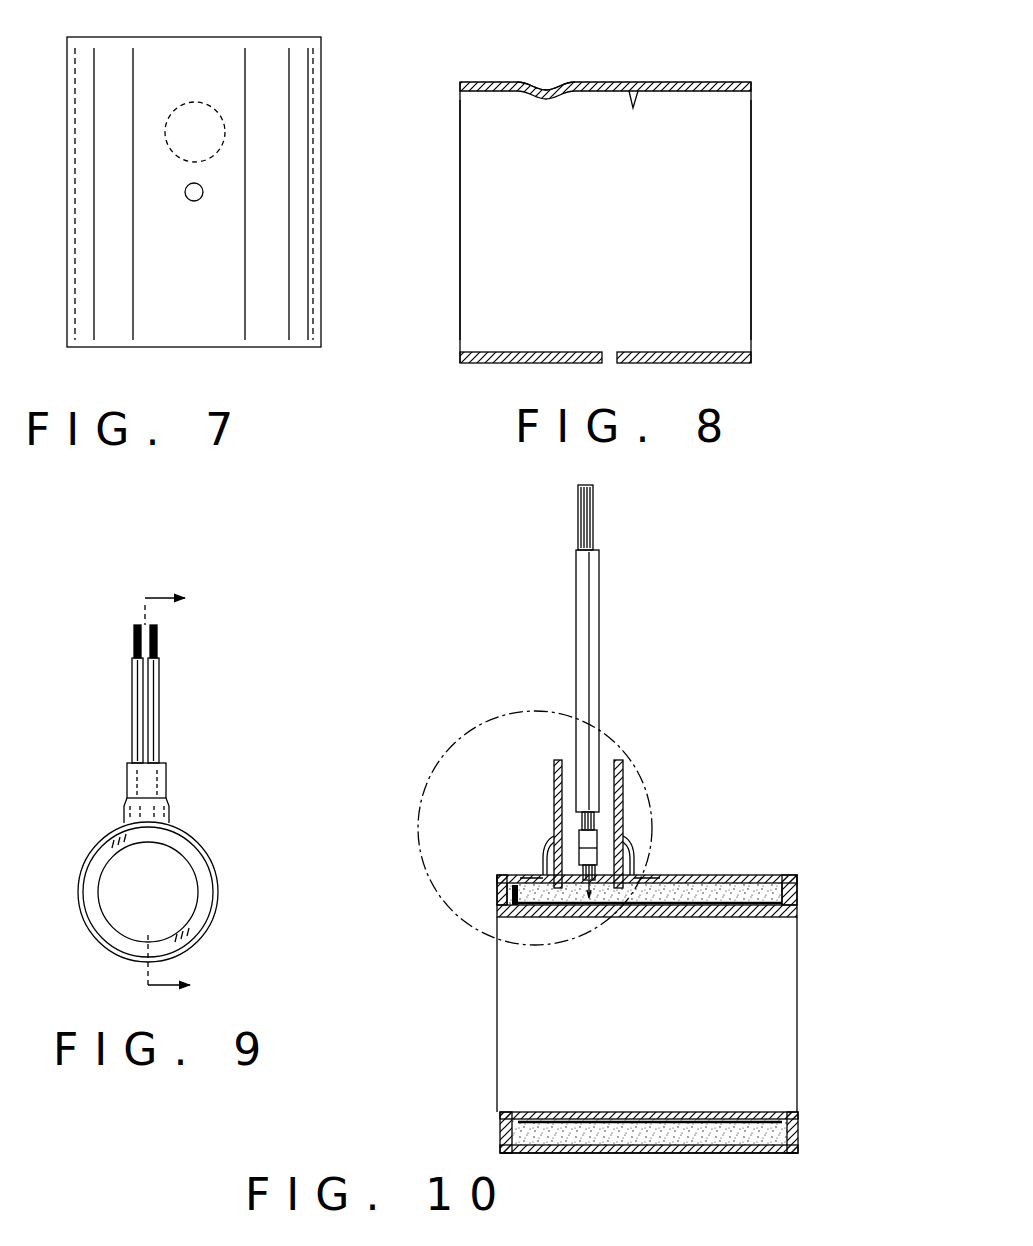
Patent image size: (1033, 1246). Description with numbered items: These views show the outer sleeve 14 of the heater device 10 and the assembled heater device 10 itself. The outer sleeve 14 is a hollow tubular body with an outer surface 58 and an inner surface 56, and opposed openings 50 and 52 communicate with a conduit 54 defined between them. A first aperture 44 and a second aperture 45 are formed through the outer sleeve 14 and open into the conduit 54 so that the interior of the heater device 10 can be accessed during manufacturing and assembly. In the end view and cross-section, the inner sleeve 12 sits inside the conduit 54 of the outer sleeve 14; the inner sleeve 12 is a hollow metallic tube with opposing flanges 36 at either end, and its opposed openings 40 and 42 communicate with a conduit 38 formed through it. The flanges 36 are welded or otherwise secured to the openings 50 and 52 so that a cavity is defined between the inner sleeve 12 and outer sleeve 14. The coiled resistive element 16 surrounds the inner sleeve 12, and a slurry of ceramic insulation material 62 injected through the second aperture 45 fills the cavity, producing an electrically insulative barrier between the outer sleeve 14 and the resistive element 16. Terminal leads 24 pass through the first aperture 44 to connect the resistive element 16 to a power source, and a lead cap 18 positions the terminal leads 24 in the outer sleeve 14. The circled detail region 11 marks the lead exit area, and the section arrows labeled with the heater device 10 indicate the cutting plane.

In FIG. 9, the heater device 10 is at (182, 815).
In FIG. 10, the heater device 10 is at (698, 800).
In FIG. 10, the detail circle region 11 is at (502, 713).
In FIG. 9, the inner sleeve 12 is at (186, 878).
In FIG. 10, the inner sleeve 12 is at (757, 917).
In FIG. 7, the outer sleeve 14 is at (258, 350).
In FIG. 8, the outer sleeve 14 is at (688, 68).
In FIG. 9, the outer sleeve 14 is at (203, 937).
In FIG. 10, the outer sleeve 14 is at (745, 875).
In FIG. 10, the coiled resistive element 16 is at (755, 1153).
In FIG. 9, the lead cap 18 is at (127, 792).
In FIG. 10, the lead cap 18 is at (554, 808).
In FIG. 9, the terminal leads 24 is at (133, 708).
In FIG. 10, the terminal leads 24 is at (597, 682).
In FIG. 10, the flanges 36 is at (497, 897).
In FIG. 9, the conduit 38 is at (162, 904).
In FIG. 10, the conduit 38 is at (660, 1036).
In FIG. 10, the opening 40 is at (497, 1063).
In FIG. 10, the opening 42 is at (797, 1022).
In FIG. 7, the first aperture 44 is at (202, 103).
In FIG. 8, the first aperture 44 is at (548, 82).
In FIG. 7, the second aperture 45 is at (204, 190).
In FIG. 8, the second aperture 45 is at (606, 362).
In FIG. 8, the opening 50 is at (468, 278).
In FIG. 8, the opening 52 is at (753, 252).
In FIG. 8, the conduit 54 is at (712, 155).
In FIG. 8, the inner surface 56 is at (636, 100).
In FIG. 7, the outer surface 58 is at (216, 262).
In FIG. 8, the outer surface 58 is at (503, 82).
In FIG. 10, the ceramic insulation material 62 is at (537, 895).